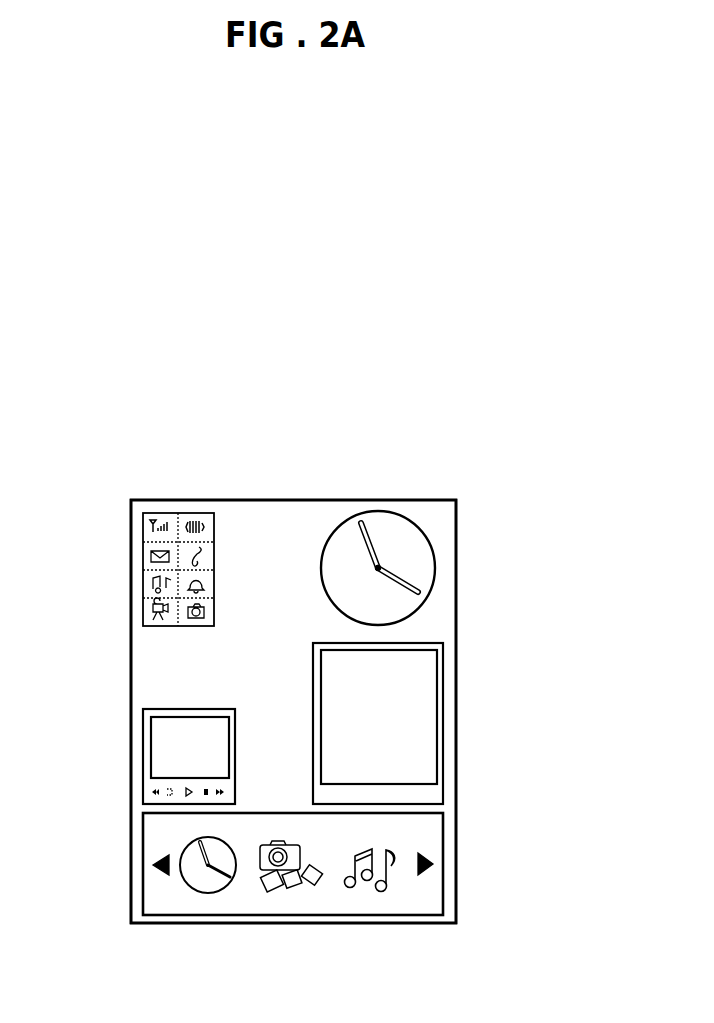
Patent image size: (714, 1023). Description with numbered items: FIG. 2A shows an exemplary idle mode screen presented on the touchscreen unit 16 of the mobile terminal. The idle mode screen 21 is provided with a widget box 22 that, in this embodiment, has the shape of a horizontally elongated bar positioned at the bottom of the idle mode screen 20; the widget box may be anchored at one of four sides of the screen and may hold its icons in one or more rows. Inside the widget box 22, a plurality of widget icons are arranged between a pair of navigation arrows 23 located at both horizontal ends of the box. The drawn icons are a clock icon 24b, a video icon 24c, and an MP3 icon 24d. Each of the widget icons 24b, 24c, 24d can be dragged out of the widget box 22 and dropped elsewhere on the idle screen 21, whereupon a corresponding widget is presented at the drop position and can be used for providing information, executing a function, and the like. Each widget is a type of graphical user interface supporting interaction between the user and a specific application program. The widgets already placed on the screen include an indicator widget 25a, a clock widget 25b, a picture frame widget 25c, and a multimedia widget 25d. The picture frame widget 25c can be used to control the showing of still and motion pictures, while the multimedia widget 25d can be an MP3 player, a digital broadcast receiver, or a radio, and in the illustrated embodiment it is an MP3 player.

The touchscreen unit 16 is at (88, 436).
The idle mode screen 20 is at (407, 497).
The idle mode screen 21 is at (253, 527).
The widget box 22 is at (443, 890).
The navigation arrows 23 is at (154, 862).
The clock icon 24b is at (208, 894).
The video icon 24c is at (277, 893).
The MP3 icon 24d is at (377, 893).
The indicator widget 25a is at (142, 533).
The clock widget 25b is at (436, 568).
The picture frame widget 25c is at (443, 675).
The multimedia widget 25d is at (143, 732).